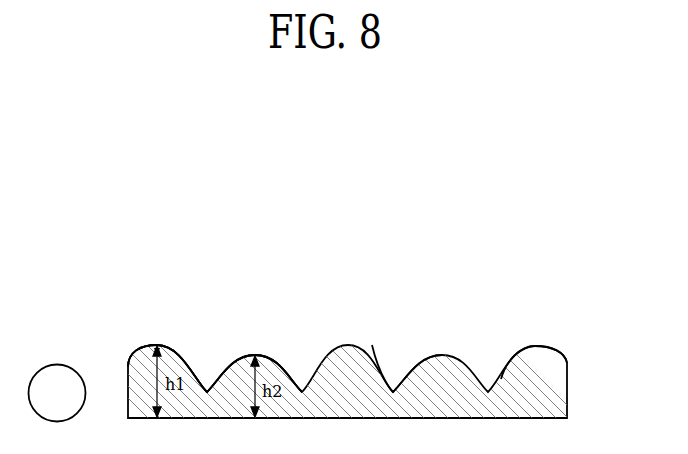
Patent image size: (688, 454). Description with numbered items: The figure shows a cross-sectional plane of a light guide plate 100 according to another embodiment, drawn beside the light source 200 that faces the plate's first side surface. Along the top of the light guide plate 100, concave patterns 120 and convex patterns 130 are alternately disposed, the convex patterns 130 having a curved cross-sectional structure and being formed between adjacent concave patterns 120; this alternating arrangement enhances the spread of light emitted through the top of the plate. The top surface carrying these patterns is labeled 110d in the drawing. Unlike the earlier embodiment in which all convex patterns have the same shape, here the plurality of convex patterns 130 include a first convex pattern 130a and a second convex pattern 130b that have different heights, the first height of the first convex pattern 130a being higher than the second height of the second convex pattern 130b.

The light guide plate 100 is at (567, 389).
The uneven surface pattern 110d is at (535, 335).
The concave pattern 120 is at (391, 375).
The convex pattern 130 is at (280, 283).
The first convex pattern 130a is at (157, 345).
The second convex pattern 130b is at (256, 355).
The light source 200 is at (69, 366).